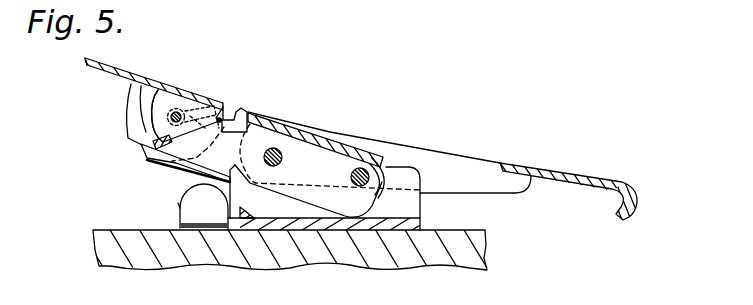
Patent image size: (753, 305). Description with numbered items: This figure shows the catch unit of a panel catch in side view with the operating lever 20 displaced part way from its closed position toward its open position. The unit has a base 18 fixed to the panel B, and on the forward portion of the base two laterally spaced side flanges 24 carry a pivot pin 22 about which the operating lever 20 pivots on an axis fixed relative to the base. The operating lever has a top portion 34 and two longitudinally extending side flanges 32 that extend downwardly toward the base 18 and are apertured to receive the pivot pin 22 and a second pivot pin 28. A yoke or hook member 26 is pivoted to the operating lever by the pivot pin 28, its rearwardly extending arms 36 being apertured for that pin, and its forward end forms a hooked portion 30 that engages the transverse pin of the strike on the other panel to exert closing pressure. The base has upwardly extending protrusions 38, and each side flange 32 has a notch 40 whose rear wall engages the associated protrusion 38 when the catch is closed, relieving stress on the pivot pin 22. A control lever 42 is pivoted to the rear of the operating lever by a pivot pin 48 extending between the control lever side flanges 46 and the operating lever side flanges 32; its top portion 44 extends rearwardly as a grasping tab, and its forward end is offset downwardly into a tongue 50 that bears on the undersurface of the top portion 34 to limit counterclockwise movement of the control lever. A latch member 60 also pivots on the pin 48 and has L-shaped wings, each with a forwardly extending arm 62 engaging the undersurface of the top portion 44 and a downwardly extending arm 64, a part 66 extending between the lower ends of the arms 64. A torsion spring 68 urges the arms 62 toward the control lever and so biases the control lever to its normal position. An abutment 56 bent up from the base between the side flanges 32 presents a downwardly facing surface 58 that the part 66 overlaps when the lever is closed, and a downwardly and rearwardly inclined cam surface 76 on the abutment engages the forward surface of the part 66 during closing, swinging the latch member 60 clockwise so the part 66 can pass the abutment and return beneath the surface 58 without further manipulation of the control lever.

The base 18 is at (422, 226).
The operating lever 20 is at (347, 145).
The pivot pin 22 is at (352, 172).
The side flanges 24 is at (422, 207).
The yoke or hook member 26 is at (554, 170).
The pivot pin 28 is at (282, 163).
The hooked portion 30 is at (636, 197).
The side flanges 32 is at (371, 198).
The top portion 34 is at (313, 137).
The side flanges or arms 36 is at (518, 195).
The protrusions 38 is at (249, 215).
The notch 40 is at (237, 178).
The control lever 42 is at (101, 59).
The top portion 44 is at (95, 68).
The side flanges 46 is at (130, 92).
The pivot pin 48 is at (180, 111).
The tongue 50 is at (241, 111).
The abutment 56 is at (180, 194).
The downwardly facing surface 58 is at (178, 210).
The latch member 60 is at (150, 109).
The forwardly extending arm 62 is at (204, 124).
The downwardly extending arm 64 is at (171, 140).
The latch part 66 is at (152, 155).
The torsion spring 68 is at (223, 107).
The cam surface 76 is at (178, 207).
The panel B is at (460, 262).